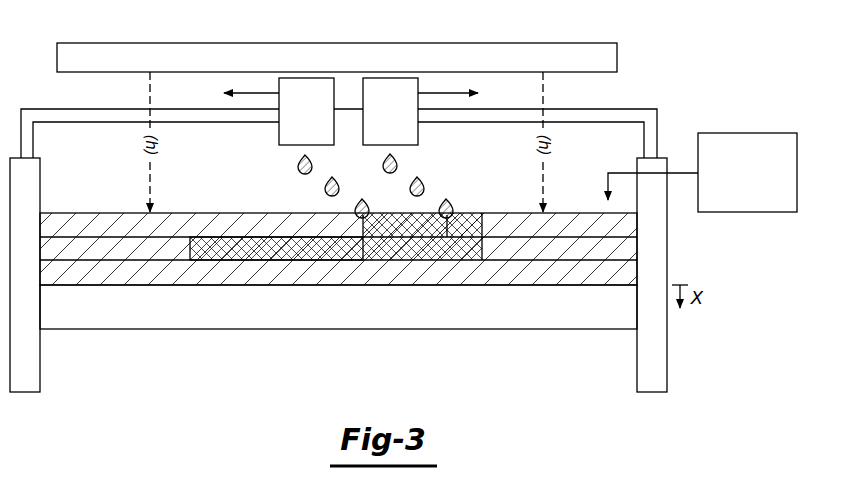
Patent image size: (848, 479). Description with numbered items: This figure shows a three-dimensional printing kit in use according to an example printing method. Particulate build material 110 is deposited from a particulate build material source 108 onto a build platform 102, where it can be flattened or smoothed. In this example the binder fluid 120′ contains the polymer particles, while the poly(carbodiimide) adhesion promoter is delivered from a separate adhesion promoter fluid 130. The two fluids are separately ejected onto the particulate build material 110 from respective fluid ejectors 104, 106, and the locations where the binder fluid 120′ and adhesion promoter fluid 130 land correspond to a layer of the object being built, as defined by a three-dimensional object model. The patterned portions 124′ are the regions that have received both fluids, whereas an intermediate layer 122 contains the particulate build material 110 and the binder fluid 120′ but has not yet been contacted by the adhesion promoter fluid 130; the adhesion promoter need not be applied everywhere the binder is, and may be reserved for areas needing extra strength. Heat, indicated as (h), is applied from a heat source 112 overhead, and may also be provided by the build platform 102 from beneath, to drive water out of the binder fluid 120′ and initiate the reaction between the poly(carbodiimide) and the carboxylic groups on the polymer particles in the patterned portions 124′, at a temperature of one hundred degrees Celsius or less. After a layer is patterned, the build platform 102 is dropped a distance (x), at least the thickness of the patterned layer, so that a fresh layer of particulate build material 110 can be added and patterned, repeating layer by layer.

The build platform 102 is at (497, 308).
The fluid ejector 104 is at (294, 122).
The fluid ejector 106 is at (378, 122).
The particulate build material source 108 is at (736, 180).
The particulate build material 110 is at (88, 252).
The heat source 112 is at (333, 67).
The binder fluid 120′ is at (297, 163).
The intermediate layer 122 is at (383, 223).
The patterned portions 124′ is at (465, 222).
The adhesion promoter fluid 130 is at (426, 185).